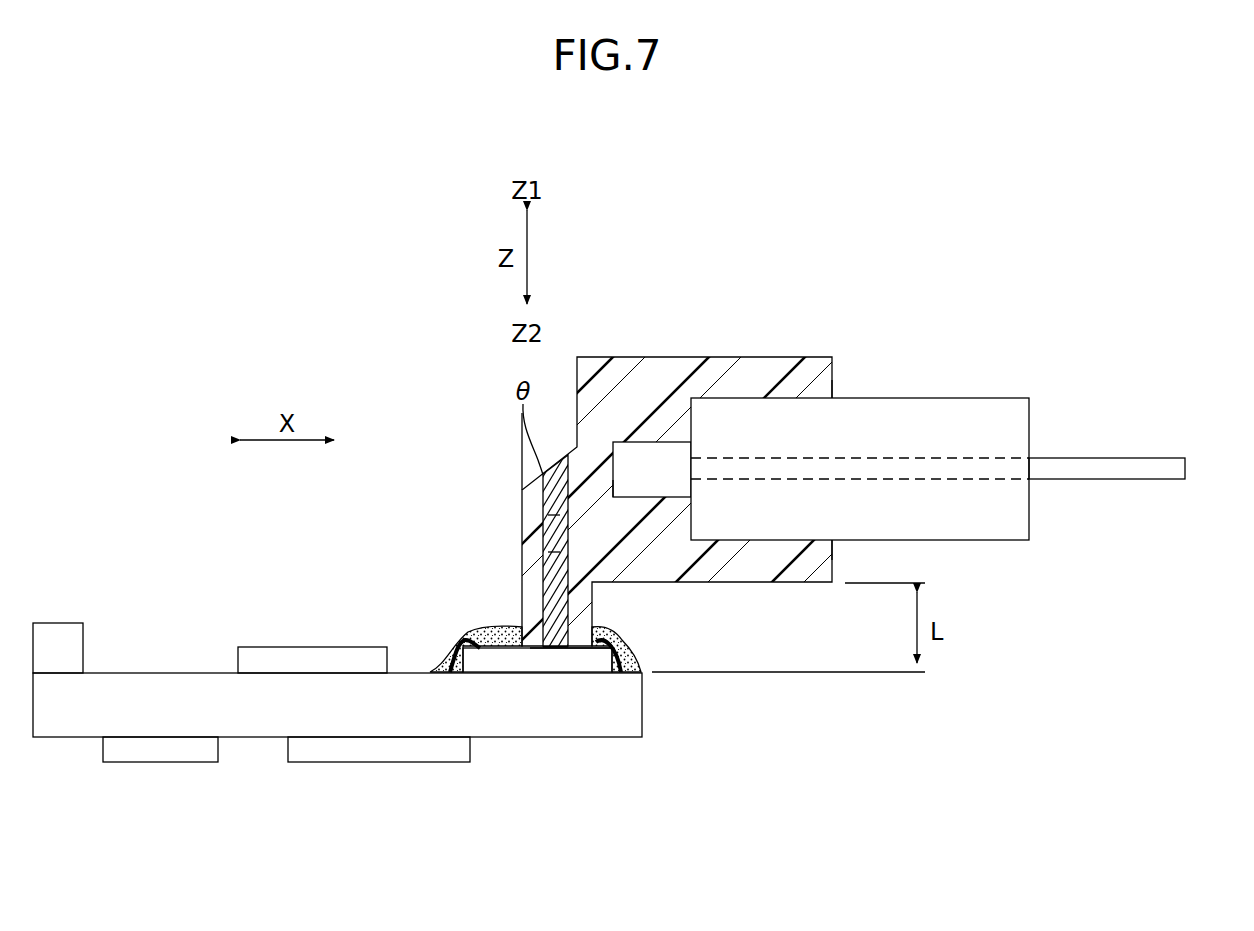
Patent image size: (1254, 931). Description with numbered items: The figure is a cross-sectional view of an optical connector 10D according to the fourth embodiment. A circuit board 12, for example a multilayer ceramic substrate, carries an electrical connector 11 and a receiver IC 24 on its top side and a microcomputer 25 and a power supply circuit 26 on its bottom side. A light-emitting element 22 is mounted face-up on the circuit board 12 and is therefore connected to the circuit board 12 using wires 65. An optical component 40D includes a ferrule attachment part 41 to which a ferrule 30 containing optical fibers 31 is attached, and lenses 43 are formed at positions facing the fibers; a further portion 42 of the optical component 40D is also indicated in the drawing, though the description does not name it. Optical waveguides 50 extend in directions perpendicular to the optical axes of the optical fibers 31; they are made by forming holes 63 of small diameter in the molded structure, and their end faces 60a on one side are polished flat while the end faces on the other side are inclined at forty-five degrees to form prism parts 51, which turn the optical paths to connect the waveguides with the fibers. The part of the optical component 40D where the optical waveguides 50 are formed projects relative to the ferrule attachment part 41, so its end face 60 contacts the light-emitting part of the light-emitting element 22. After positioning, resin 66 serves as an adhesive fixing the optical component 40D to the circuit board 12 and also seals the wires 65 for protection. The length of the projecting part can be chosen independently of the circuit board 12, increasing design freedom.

The optical connector 10D is at (914, 286).
The electrical connector 11 is at (55, 632).
The circuit board 12 is at (179, 713).
The light-emitting element 22 is at (487, 660).
The receiver IC 24 is at (316, 660).
The microcomputer 25 is at (345, 750).
The power supply circuit 26 is at (125, 750).
The ferrule 30 is at (1003, 418).
The optical fibers 31 is at (1125, 460).
The optical component 40D is at (723, 352).
The ferrule attachment part 41 is at (782, 404).
The support step 42 is at (608, 487).
The lenses 43 is at (612, 466).
The optical waveguides 50 is at (557, 558).
The prism parts 51 is at (546, 475).
The end face 60 is at (586, 652).
The end faces 60a is at (555, 652).
The holes 63 is at (557, 520).
The wires 65 is at (457, 636).
The resin 66 is at (492, 628).